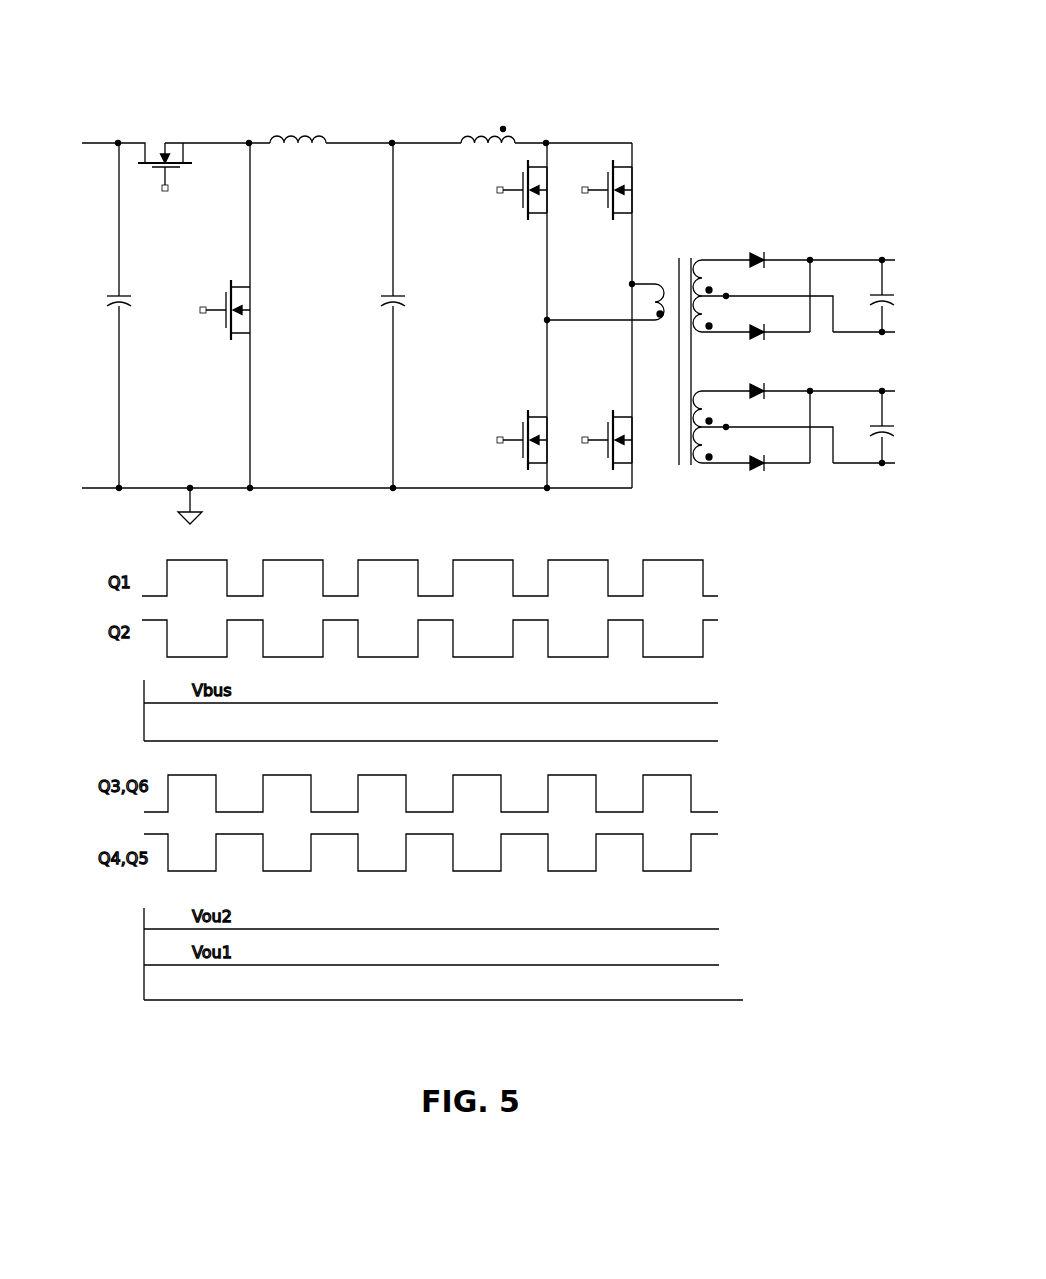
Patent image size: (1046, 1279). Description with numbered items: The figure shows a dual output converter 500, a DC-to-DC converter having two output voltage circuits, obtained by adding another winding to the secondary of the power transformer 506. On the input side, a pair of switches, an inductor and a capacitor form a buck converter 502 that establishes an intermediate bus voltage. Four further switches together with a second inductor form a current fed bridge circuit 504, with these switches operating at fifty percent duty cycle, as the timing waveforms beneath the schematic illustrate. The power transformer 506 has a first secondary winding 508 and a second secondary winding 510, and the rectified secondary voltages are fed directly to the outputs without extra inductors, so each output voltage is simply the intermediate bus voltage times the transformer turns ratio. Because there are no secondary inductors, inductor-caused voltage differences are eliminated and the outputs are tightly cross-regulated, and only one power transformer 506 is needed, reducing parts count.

The dual output converter 500 is at (688, 72).
The buck converter 502 is at (418, 110).
The current fed bridge circuit 504 is at (662, 110).
The power transformer 506 is at (700, 228).
The first secondary winding 508 is at (718, 253).
The second secondary winding 510 is at (717, 472).